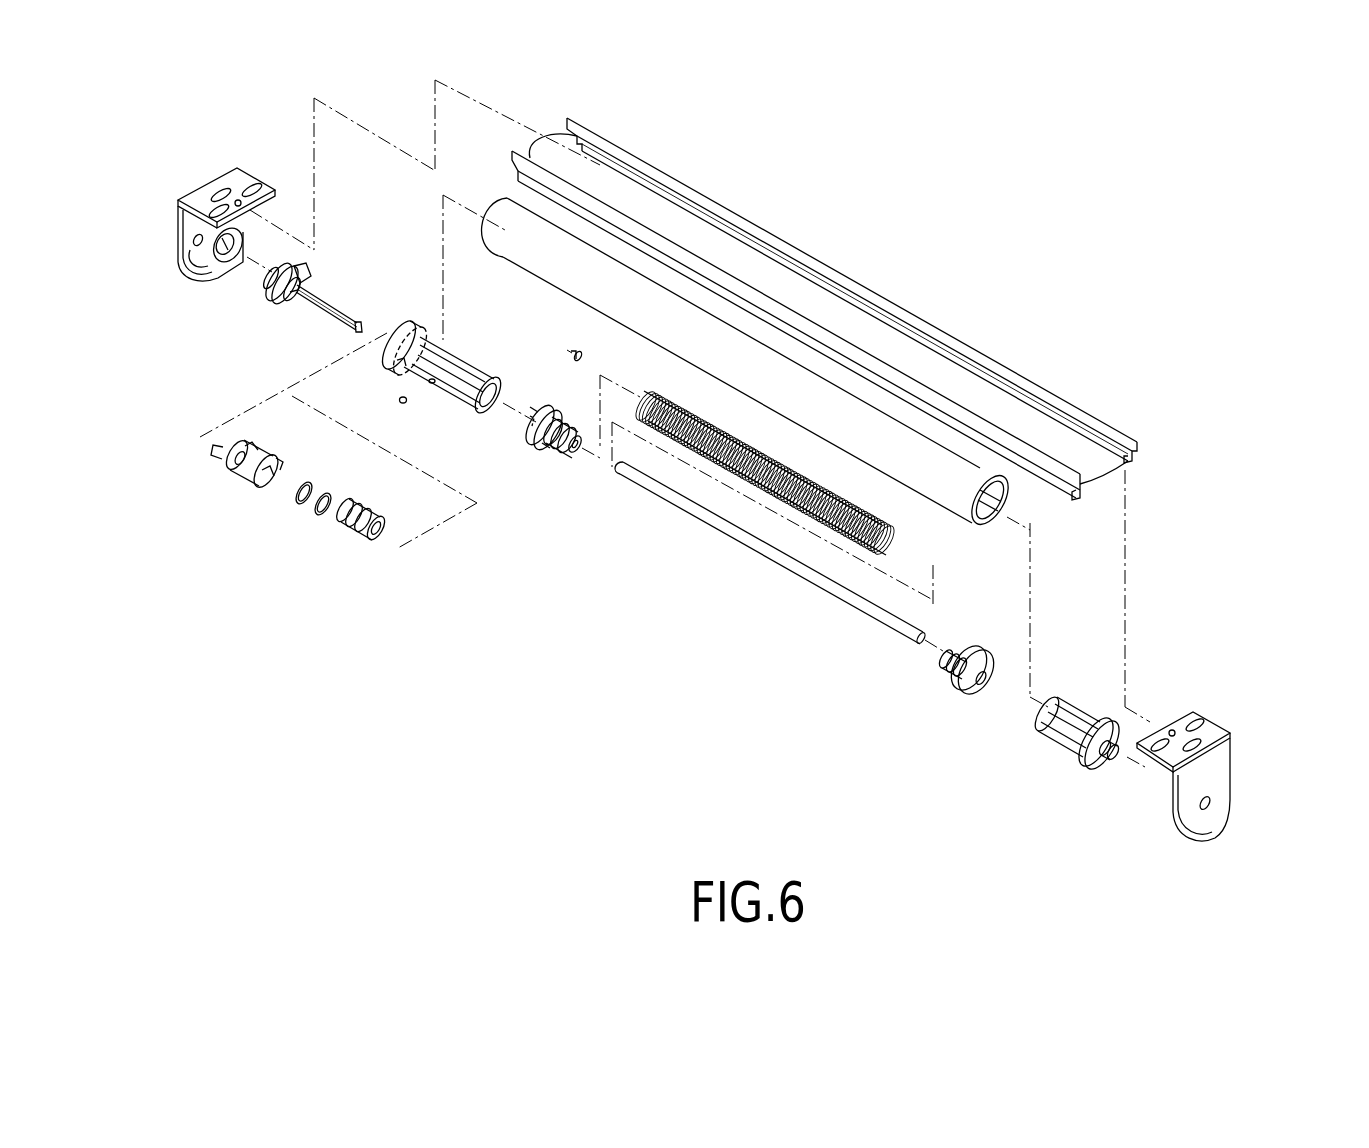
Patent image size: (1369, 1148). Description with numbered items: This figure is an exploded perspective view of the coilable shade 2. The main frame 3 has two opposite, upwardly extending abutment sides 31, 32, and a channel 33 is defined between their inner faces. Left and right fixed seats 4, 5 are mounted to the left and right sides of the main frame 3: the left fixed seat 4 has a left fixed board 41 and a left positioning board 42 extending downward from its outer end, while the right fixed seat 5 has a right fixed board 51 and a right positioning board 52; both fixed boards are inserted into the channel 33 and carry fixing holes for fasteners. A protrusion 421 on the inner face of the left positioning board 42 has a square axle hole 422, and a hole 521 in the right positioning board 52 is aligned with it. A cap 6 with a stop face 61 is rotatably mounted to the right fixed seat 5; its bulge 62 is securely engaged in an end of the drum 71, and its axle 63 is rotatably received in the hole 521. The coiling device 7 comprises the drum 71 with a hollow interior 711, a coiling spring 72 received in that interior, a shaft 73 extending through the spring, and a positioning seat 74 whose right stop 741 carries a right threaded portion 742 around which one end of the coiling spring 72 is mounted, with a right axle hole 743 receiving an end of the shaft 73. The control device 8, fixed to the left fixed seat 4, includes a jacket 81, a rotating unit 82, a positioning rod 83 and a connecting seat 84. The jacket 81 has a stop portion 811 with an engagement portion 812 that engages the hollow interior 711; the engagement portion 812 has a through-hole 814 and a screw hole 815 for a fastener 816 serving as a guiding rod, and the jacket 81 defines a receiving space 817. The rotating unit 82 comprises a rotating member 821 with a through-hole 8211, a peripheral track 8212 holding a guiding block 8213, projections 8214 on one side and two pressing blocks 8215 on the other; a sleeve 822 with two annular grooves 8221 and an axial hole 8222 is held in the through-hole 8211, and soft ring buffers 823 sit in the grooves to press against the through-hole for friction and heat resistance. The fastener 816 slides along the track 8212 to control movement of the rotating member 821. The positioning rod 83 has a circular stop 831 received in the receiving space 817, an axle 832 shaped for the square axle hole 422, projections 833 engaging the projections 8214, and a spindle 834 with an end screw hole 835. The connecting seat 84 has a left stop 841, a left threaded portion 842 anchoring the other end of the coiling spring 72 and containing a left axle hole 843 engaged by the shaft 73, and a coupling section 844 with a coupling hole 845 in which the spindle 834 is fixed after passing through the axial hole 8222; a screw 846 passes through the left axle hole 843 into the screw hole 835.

The coilable shade 2 is at (873, 245).
The main frame 3 is at (872, 280).
The abutment side 31 is at (940, 332).
The abutment side 32 is at (890, 378).
The channel 33 is at (1133, 452).
The left fixed seat 4 is at (204, 182).
The left fixed board 41 is at (241, 183).
The left positioning board 42 is at (182, 243).
The protrusion 421 is at (207, 266).
The square axle hole 422 is at (225, 283).
The right fixed seat 5 is at (1234, 710).
The right fixed board 51 is at (1174, 728).
The right positioning board 52 is at (1220, 763).
The hole 521 is at (1210, 804).
The cap 6 is at (1074, 693).
The stop face 61 is at (1088, 760).
The bulge 62 is at (1092, 722).
The axle 63 is at (1113, 757).
The coiling device 7 is at (970, 738).
The drum 71 is at (520, 228).
The hollow interior 711 is at (1000, 500).
The coiling spring 72 is at (742, 452).
The shaft 73 is at (835, 594).
The positioning seat 74 is at (969, 644).
The right stop 741 is at (968, 688).
The right threaded portion 742 is at (947, 660).
The right axle hole 743 is at (1003, 672).
The control device 8 is at (197, 437).
The jacket 81 is at (437, 410).
The stop portion 811 is at (433, 324).
The engagement portion 812 is at (466, 378).
The through-hole 814 is at (480, 419).
The screw hole 815 is at (428, 382).
The fastener 816 is at (405, 405).
The receiving space 817 is at (397, 364).
The rotating unit 82 is at (385, 584).
The rotating member 821 is at (238, 464).
The through-hole 8211 is at (268, 483).
The track 8212 is at (238, 458).
The guiding block 8213 is at (253, 451).
The projections 8214 is at (220, 451).
The pressing blocks 8215 is at (288, 460).
The sleeve 822 is at (357, 521).
The annular groove 8221 is at (359, 524).
The axial hole 8222 is at (378, 541).
The soft ring buffer 823 is at (303, 490).
The positioning rod 83 is at (310, 321).
The circular stop 831 is at (288, 293).
The axle 832 is at (271, 283).
The projections 833 is at (305, 278).
The spindle 834 is at (337, 306).
The screw hole 835 is at (368, 330).
The connecting seat 84 is at (546, 399).
The left stop 841 is at (543, 455).
The left threaded portion 842 is at (553, 460).
The left axle hole 843 is at (578, 453).
The coupling section 844 is at (536, 447).
The coupling hole 845 is at (528, 432).
The screw 846 is at (570, 352).